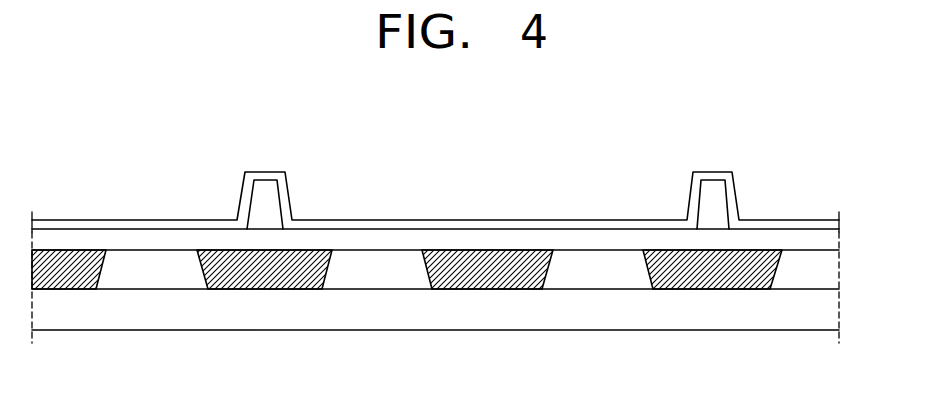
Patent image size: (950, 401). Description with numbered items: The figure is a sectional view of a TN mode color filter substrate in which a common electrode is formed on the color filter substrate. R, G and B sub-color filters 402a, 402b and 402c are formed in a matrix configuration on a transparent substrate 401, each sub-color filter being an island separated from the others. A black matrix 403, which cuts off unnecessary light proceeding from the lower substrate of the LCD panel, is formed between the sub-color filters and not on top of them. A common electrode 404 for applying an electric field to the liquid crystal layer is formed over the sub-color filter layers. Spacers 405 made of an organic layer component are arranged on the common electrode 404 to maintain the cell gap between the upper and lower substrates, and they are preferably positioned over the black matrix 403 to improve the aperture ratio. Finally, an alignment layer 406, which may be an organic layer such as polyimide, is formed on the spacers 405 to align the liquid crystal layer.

The transparent substrate 401 is at (832, 320).
The R sub-color filter 402a is at (173, 280).
The G sub-color filter 402b is at (355, 280).
The B sub-color filter 402c is at (577, 280).
The black matrix 403 is at (267, 280).
The common electrode 404 is at (832, 242).
The spacer 405 is at (712, 190).
The alignment layer 406 is at (793, 225).